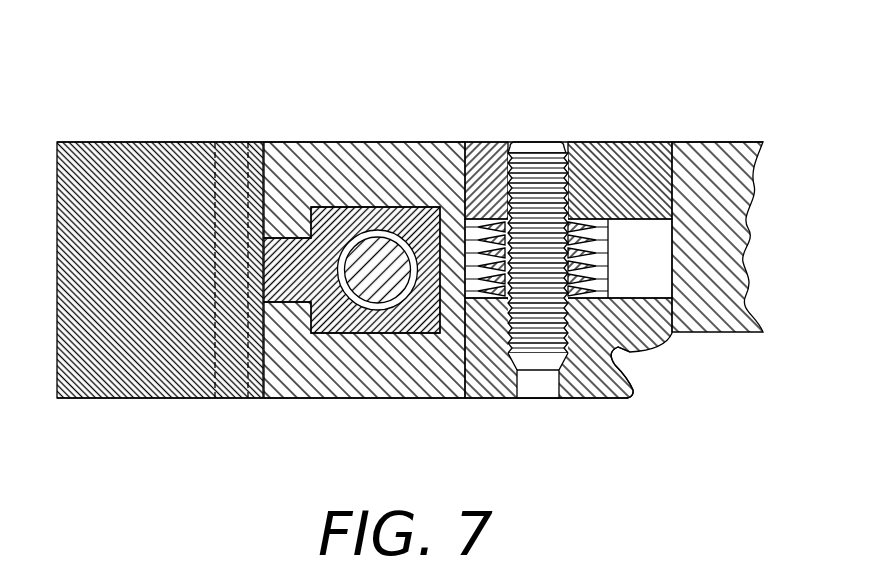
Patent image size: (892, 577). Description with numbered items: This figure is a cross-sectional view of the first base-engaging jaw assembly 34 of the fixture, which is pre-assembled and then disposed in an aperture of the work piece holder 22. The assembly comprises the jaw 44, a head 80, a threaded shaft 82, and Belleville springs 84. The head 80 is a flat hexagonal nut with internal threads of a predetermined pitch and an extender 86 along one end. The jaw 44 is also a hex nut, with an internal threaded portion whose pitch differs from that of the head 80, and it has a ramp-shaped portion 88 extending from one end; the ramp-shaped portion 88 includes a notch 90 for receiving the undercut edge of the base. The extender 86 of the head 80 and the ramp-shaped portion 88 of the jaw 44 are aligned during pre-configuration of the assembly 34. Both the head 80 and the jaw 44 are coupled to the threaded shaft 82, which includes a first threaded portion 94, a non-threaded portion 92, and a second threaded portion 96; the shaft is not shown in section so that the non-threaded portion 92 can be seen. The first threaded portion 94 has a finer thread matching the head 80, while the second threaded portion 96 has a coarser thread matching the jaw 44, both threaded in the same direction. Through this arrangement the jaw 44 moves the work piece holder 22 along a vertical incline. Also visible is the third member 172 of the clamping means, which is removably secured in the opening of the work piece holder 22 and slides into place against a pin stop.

The third member 172 is at (140, 141).
The first base-engaging jaw assembly 34 is at (520, 78).
The threaded shaft 82 is at (488, 150).
The first threaded portion 94 is at (538, 150).
The head 80 is at (613, 141).
The extender 86 is at (643, 156).
The work piece holder 22 is at (737, 141).
The non-threaded portion 92 is at (572, 233).
The Belleville springs 84 is at (574, 258).
The jaw 44 is at (672, 318).
The ramp-shaped portion 88 is at (652, 358).
The notch 90 is at (633, 372).
The second threaded portion 96 is at (538, 352).